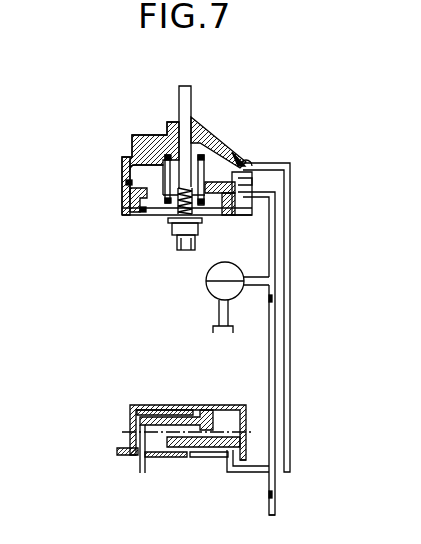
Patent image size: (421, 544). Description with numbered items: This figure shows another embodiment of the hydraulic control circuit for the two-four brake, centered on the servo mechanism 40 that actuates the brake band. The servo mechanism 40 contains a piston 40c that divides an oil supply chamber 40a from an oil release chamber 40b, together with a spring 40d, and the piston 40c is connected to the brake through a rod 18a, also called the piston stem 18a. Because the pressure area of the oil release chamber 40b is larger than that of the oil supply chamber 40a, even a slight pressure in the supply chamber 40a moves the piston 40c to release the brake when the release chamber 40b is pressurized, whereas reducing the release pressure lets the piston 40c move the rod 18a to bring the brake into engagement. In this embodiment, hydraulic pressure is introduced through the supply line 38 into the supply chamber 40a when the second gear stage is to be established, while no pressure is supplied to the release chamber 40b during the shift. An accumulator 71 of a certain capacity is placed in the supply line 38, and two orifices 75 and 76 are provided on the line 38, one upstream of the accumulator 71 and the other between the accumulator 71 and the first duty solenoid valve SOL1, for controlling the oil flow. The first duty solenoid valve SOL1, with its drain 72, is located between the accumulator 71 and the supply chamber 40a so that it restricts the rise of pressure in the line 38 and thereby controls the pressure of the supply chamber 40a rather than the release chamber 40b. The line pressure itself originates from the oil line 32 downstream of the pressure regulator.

The servo mechanism 40 is at (166, 190).
The rod 18a is at (192, 96).
The oil supply chamber 40a is at (132, 194).
The oil release chamber 40b is at (246, 168).
The piston 40c is at (204, 222).
The spring 40d is at (230, 150).
The first duty solenoid valve SOL1 is at (206, 285).
The solenoid drain 72 is at (221, 334).
The supply line 38 is at (277, 267).
The orifice 76 is at (276, 299).
The orifice 75 is at (276, 494).
The accumulator 71 is at (121, 418).
The oil line 32 is at (125, 468).